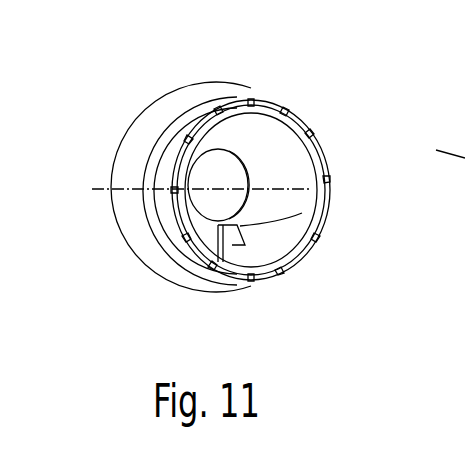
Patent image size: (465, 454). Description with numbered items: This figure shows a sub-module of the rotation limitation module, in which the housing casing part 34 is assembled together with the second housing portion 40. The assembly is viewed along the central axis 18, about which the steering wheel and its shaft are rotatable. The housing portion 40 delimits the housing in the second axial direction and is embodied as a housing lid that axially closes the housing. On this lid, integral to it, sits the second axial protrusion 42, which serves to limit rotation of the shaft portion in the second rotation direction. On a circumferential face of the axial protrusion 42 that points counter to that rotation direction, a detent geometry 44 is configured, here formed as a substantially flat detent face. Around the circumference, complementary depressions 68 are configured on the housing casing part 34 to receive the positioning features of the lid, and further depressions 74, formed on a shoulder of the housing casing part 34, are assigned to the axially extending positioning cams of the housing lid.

The housing casing part 34 is at (131, 162).
The central axis 18 is at (108, 187).
The housing portion 40 is at (263, 143).
The detent geometry 44 is at (302, 213).
The second axial protrusion 42 is at (285, 278).
The complementary depressions 68 is at (174, 187).
The depressions 74 is at (450, 145).